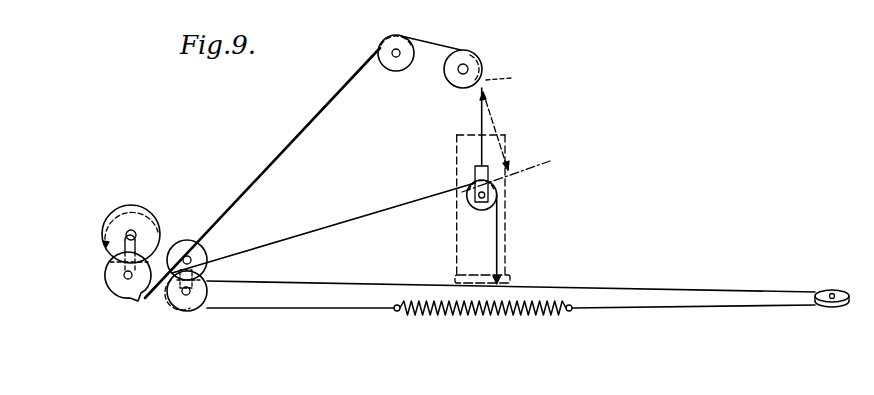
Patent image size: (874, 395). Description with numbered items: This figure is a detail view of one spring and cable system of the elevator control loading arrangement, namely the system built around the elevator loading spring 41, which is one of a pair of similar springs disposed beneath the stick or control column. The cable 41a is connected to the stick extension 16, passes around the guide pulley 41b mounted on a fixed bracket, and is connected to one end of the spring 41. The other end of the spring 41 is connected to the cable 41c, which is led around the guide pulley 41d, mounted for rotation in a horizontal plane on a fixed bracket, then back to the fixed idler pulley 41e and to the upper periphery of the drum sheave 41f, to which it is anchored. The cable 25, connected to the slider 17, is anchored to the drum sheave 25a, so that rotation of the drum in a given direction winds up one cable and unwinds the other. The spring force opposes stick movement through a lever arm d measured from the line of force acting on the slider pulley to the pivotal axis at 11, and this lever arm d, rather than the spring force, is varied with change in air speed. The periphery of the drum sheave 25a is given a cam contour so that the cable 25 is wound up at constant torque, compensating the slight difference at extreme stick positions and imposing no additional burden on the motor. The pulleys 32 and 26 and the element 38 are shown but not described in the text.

The pulley 32 is at (378, 50).
The pulley 26 is at (477, 55).
The cable 25 is at (318, 118).
The pivotal axis 11 is at (508, 79).
The lever arm d is at (512, 124).
The slider 17 is at (476, 182).
The stick extension 16 is at (455, 240).
The cable 41a is at (331, 228).
The elevator loading spring 41 is at (462, 307).
The cable 41c is at (160, 243).
The guide pulley 41d is at (828, 290).
The drum sheave 41f is at (127, 205).
The pivot 38 is at (123, 277).
The drum sheave 25a is at (120, 292).
The idler pulley 41e is at (205, 254).
The guide pulley 41b is at (182, 312).